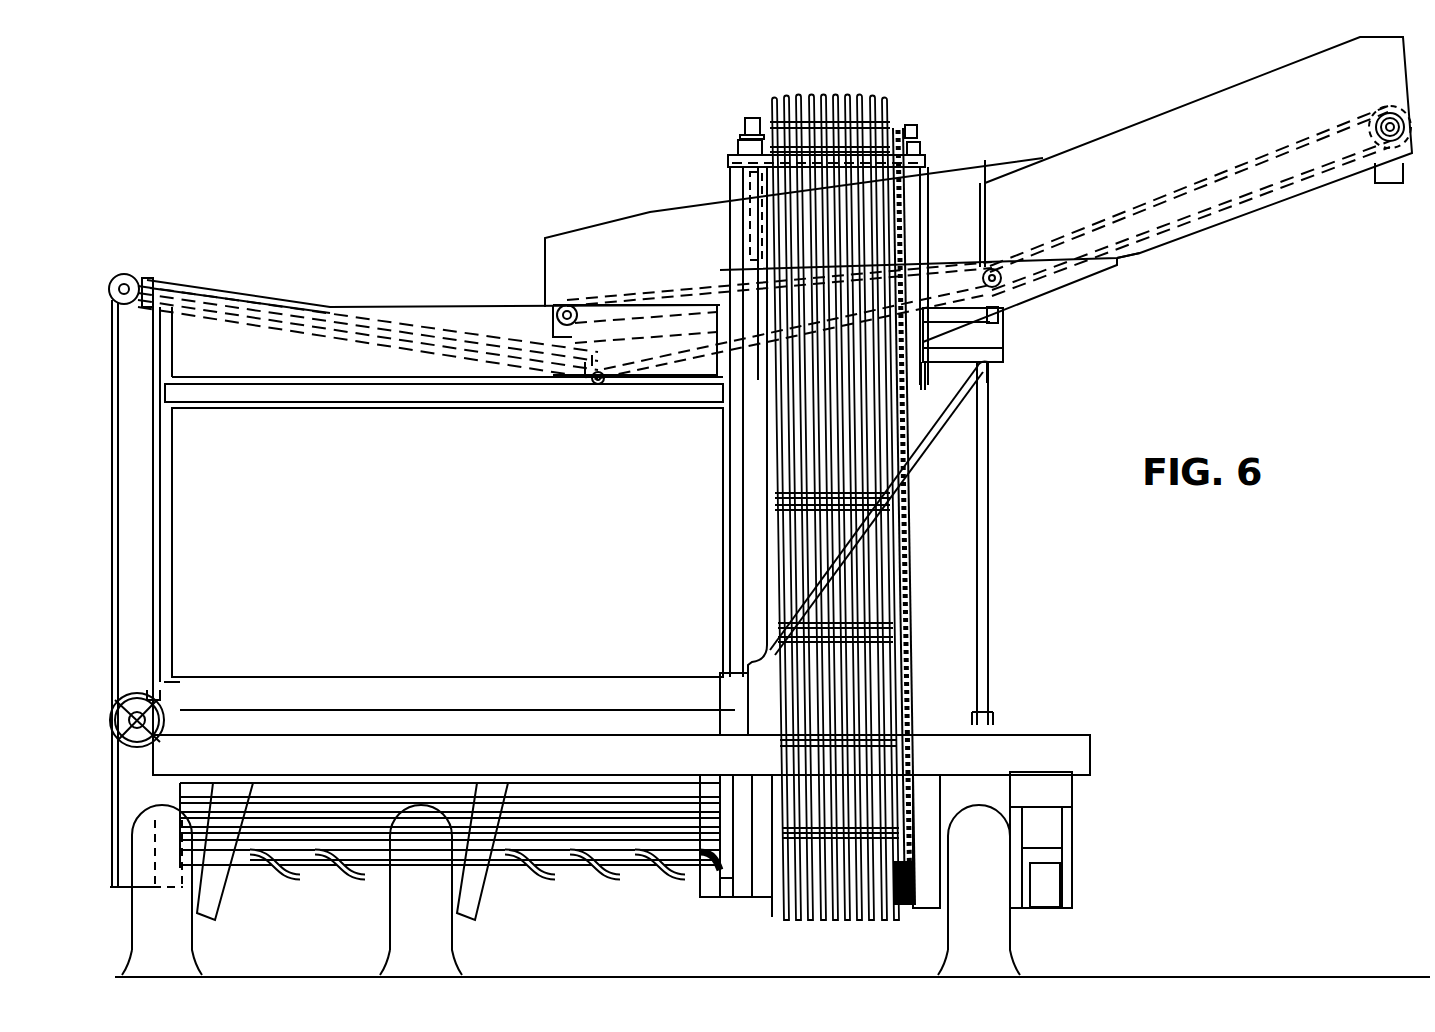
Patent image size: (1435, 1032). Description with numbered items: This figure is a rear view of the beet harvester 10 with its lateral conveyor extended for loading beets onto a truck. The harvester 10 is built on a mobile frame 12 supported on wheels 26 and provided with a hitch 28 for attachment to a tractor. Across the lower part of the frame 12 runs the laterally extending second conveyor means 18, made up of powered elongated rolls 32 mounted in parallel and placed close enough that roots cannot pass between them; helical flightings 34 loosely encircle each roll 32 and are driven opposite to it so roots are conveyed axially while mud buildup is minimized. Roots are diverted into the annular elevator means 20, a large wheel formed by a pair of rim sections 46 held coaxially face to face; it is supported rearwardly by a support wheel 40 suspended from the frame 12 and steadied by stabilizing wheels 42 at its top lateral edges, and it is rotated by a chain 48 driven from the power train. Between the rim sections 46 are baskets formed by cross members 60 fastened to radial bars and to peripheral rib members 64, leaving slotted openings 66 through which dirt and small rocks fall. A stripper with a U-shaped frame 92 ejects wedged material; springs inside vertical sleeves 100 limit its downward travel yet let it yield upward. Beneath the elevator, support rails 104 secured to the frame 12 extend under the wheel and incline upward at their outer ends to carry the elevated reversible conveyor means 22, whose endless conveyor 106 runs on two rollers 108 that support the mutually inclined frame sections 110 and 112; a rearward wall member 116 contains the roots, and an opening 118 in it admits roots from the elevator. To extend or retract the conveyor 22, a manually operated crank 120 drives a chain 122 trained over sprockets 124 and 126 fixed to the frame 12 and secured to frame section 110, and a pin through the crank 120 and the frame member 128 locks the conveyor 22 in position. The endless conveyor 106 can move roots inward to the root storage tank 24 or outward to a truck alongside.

The beet harvester 10 is at (429, 200).
The mobile frame 12 is at (1020, 750).
The second conveyor means 18 is at (307, 887).
The annular elevator means 20 is at (935, 576).
The elevated reversible conveyor means 22 is at (1088, 114).
The root storage tank 24 is at (412, 567).
The wheels 26 is at (437, 928).
The hitch 28 is at (352, 851).
The powered elongated rolls 32 is at (585, 858).
The helical flightings 34 is at (683, 858).
The support wheel 40 is at (898, 905).
The stabilizing wheels 42 is at (750, 123).
The rim sections 46 is at (773, 605).
The chain 48 is at (898, 124).
The cross members 60 is at (795, 508).
The rib members 64 is at (859, 912).
The slotted openings 66 is at (795, 460).
The U-shaped frame 92 is at (734, 160).
The vertical sleeves 100 is at (742, 245).
The support rails 104 is at (178, 287).
The endless conveyor 106 is at (1222, 172).
The rollers 108 is at (622, 352).
The frame section 110 is at (556, 331).
The frame section 112 is at (1393, 150).
The rearward wall member 116 is at (600, 245).
The opening 118 is at (756, 194).
The crank 120 is at (162, 708).
The chain 122 is at (236, 300).
The sprocket 124 is at (128, 274).
The sprocket 126 is at (603, 386).
The frame member 128 is at (147, 698).